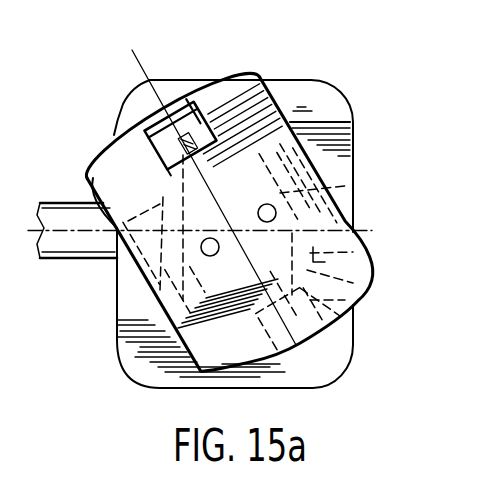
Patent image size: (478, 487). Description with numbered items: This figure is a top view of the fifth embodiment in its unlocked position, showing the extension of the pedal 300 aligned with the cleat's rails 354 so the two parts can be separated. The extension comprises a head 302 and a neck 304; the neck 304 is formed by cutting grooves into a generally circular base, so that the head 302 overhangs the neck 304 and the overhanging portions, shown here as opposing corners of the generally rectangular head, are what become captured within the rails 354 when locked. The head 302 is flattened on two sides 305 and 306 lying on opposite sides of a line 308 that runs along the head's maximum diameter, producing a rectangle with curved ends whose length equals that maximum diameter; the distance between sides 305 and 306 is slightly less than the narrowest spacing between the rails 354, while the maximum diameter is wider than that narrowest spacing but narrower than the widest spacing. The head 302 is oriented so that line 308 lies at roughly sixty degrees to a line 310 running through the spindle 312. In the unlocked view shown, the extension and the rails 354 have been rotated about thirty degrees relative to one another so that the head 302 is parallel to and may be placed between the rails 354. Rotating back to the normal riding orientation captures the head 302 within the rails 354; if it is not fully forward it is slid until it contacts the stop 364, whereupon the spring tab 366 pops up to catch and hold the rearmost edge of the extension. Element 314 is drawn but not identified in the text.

The pedal 300 is at (352, 118).
The head 302 is at (354, 303).
The neck 304 is at (165, 193).
The flattened side 305 is at (118, 322).
The flattened side 306 is at (342, 185).
The line 308 is at (143, 65).
The line 310 is at (67, 229).
The spindle 312 is at (90, 251).
The pin 314 is at (353, 253).
The rails 354 is at (283, 110).
The stop 364 is at (347, 320).
The spring tab 366 is at (194, 102).